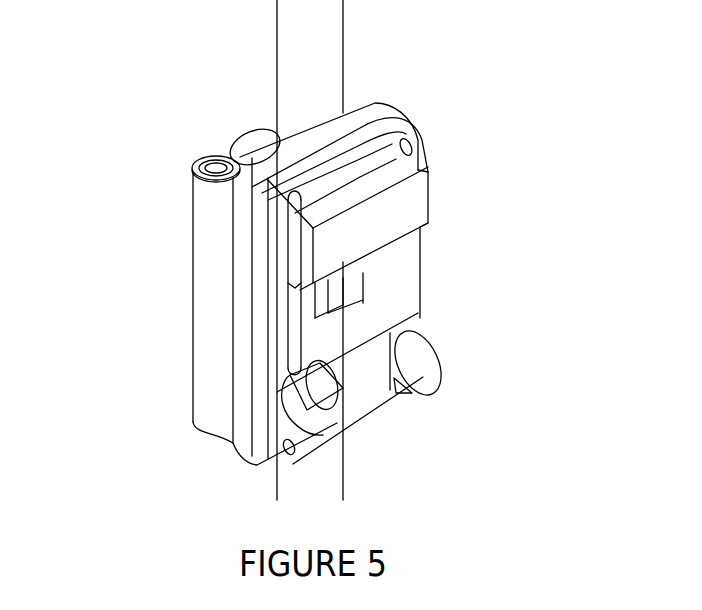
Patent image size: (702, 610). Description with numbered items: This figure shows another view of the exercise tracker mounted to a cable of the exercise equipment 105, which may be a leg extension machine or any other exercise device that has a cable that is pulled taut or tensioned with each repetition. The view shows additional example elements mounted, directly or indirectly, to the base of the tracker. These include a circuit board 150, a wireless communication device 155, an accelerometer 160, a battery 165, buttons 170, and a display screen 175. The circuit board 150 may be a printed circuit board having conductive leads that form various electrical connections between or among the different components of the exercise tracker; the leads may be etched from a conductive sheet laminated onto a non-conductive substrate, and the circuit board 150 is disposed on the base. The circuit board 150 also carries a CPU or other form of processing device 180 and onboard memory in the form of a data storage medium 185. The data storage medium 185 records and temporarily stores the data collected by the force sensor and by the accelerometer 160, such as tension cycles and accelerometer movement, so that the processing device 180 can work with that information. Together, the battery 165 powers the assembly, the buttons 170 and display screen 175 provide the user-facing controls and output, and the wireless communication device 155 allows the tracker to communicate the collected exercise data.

The exercise equipment 105 is at (155, 165).
The circuit board 150 is at (418, 145).
The wireless communication device 155 is at (418, 272).
The accelerometer 160 is at (373, 413).
The battery 165 is at (192, 283).
The buttons 170 is at (323, 435).
The display screen 175 is at (432, 195).
The processing device 180 is at (287, 337).
The data storage medium 185 is at (363, 283).